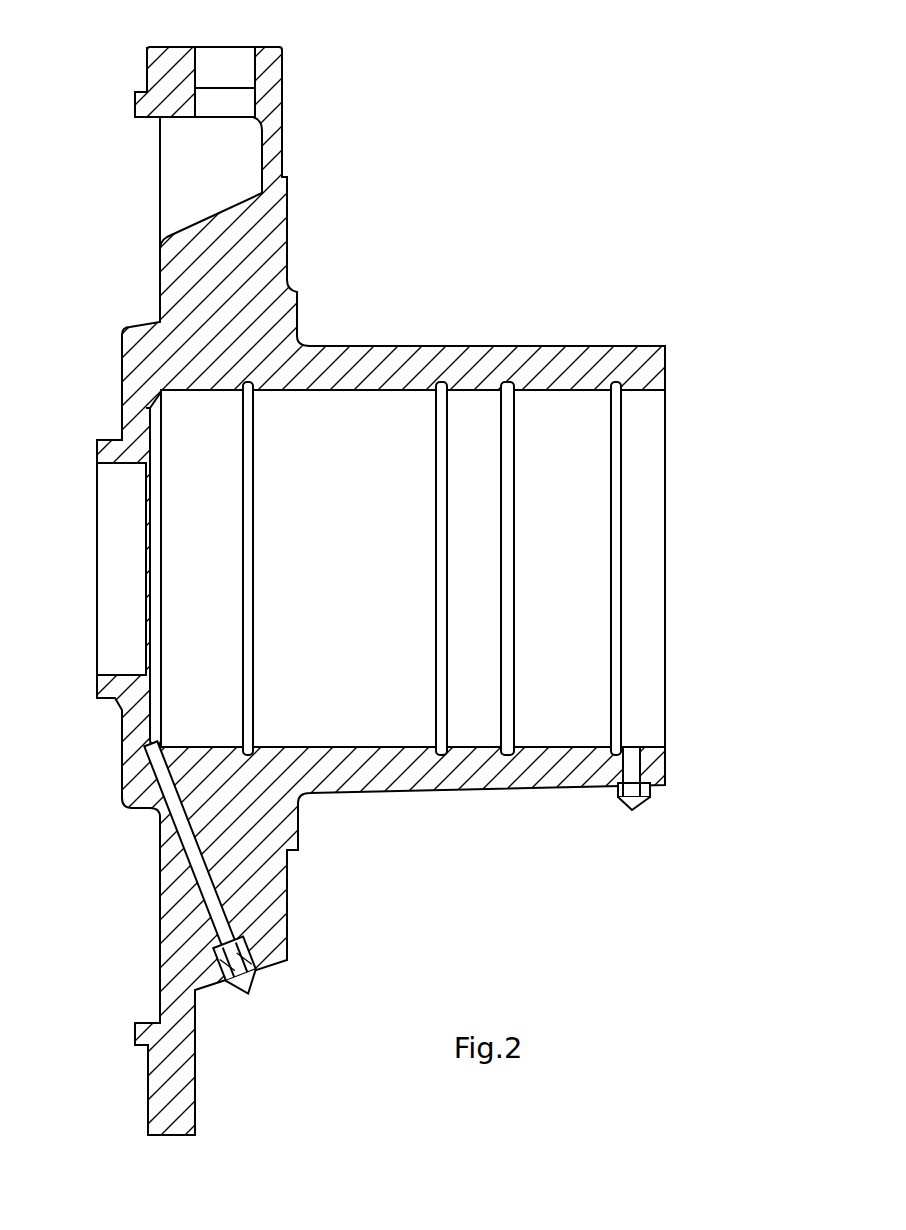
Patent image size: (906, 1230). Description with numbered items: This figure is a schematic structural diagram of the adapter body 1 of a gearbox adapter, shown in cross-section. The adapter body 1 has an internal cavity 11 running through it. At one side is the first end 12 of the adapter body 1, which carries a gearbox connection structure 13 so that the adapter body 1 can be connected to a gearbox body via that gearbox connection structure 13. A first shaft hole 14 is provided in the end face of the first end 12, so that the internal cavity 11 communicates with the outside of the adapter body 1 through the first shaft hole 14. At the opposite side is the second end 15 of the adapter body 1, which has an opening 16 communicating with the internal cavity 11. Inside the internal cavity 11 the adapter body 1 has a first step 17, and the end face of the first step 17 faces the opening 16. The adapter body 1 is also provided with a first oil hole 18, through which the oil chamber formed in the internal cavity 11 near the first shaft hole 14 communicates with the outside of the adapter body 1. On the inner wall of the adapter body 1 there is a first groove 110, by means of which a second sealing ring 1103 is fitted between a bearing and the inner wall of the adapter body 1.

The adapter body 1 is at (458, 347).
The internal cavity 11 is at (350, 408).
The first groove 110 is at (507, 497).
The second sealing ring 1103 is at (640, 760).
The first end 12 is at (130, 457).
The gearbox connection structure 13 is at (148, 103).
The first shaft hole 14 is at (127, 580).
The second end 15 is at (650, 347).
The opening 16 is at (640, 502).
The first step 17 is at (147, 740).
The first oil hole 18 is at (160, 843).